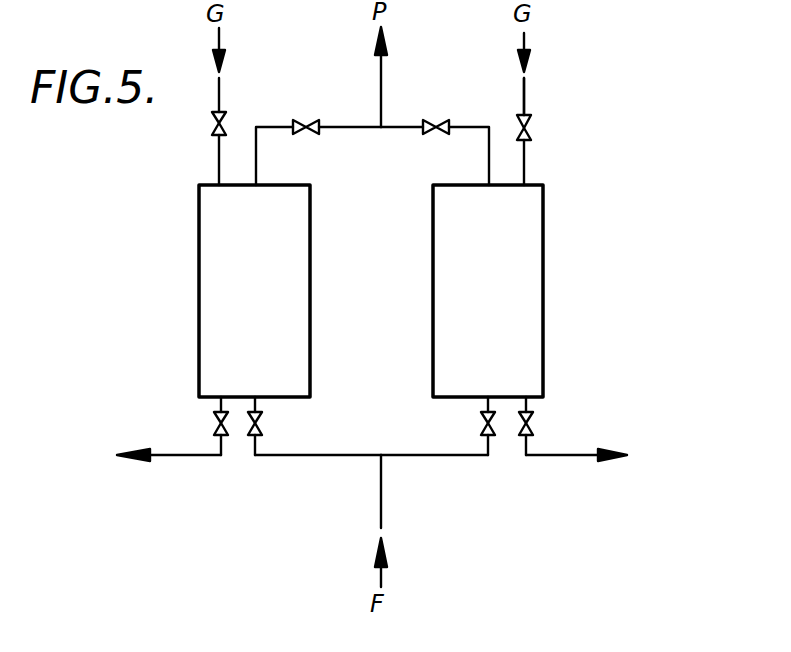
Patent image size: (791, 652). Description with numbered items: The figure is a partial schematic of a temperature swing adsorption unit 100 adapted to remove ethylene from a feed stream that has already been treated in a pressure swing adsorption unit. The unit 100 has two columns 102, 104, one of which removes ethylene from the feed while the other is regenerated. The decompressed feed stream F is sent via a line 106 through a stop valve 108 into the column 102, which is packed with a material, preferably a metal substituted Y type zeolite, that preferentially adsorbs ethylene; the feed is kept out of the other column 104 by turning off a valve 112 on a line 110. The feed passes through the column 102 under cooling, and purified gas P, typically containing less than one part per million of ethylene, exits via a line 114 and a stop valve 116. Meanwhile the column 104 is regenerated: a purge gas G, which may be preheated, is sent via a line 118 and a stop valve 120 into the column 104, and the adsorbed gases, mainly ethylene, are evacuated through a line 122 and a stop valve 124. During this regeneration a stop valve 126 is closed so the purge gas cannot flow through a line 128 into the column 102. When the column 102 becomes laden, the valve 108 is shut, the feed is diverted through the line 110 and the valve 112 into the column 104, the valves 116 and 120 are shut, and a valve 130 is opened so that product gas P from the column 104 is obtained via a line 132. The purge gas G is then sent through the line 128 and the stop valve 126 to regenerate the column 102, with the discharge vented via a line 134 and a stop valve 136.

The temperature swing adsorption unit 100 is at (586, 264).
The column 102 is at (280, 297).
The column 104 is at (513, 297).
The line 106 is at (285, 456).
The stop valve 108 is at (261, 423).
The line 110 is at (412, 457).
The valve 112 is at (481, 428).
The line 114 is at (256, 160).
The stop valve 116 is at (309, 120).
The line 118 is at (526, 92).
The stop valve 120 is at (528, 128).
The line 122 is at (532, 412).
The stop valve 124 is at (533, 425).
The stop valve 126 is at (212, 127).
The line 128 is at (214, 160).
The valve 130 is at (437, 120).
The line 132 is at (489, 163).
The line 134 is at (221, 405).
The stop valve 136 is at (215, 423).